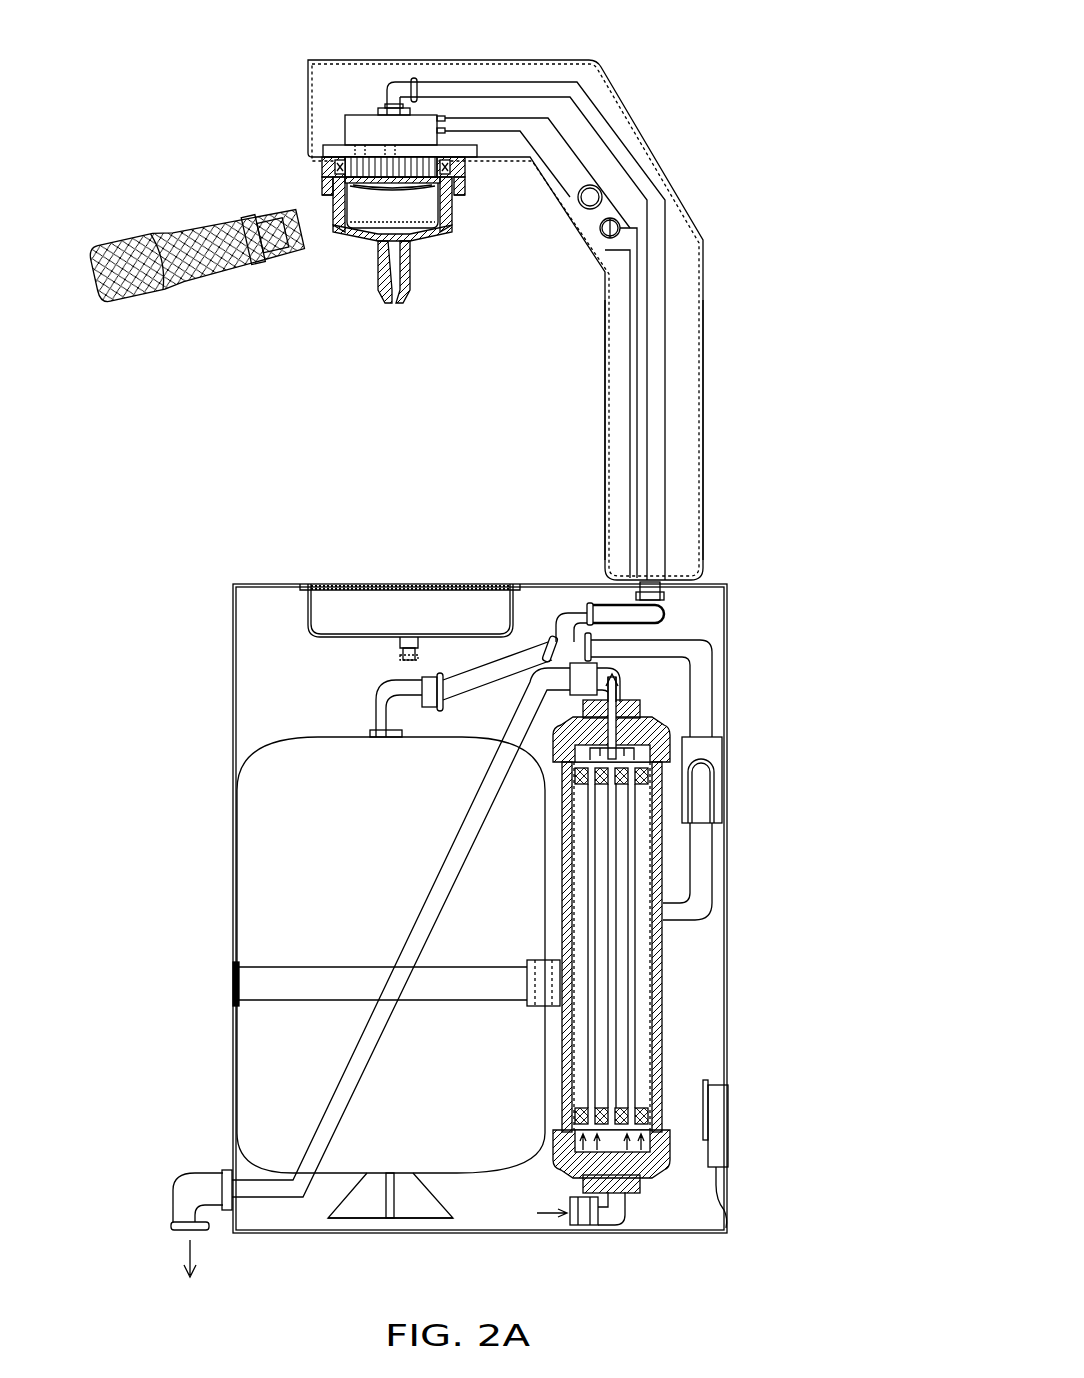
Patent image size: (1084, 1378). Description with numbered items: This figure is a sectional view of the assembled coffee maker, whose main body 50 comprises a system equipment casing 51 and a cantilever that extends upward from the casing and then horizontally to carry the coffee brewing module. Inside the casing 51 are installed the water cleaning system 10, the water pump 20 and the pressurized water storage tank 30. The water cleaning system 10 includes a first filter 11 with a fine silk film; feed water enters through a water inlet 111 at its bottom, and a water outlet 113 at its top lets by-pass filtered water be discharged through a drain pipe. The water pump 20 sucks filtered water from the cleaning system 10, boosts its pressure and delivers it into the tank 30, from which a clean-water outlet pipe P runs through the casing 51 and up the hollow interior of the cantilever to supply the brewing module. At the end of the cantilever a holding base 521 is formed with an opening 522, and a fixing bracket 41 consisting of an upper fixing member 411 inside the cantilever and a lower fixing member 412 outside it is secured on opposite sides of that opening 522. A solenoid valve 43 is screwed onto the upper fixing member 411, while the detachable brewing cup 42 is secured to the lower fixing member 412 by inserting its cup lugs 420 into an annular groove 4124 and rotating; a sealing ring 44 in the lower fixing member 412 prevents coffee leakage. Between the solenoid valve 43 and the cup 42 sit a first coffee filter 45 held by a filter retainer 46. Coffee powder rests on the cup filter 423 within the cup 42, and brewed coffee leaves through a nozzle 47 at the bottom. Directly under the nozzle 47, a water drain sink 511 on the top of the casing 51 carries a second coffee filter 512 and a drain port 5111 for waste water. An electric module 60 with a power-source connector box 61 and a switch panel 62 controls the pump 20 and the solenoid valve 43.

The water cleaning system 10 is at (666, 960).
The first filter 11 is at (668, 1020).
The water inlet 111 is at (633, 1190).
The water outlet 113 is at (622, 712).
The water pump 20 is at (714, 752).
The clean-water outlet pipe P is at (633, 650).
The pressurized water storage tank 30 is at (275, 838).
The fixing bracket 41 is at (338, 138).
The upper fixing member 411 is at (332, 152).
The lower fixing member 412 is at (323, 186).
The annular groove 4124 is at (280, 254).
The detachable brewing cup 42 is at (430, 238).
The cup lugs 420 is at (596, 190).
The cup filter 423 is at (367, 216).
The solenoid valve 43 is at (375, 118).
The sealing ring 44 is at (520, 160).
The first coffee filter 45 is at (397, 190).
The filter retainer 46 is at (385, 180).
The nozzle 47 is at (410, 280).
The main body 50 is at (705, 440).
The system equipment casing 51 is at (728, 620).
The water drain sink 511 is at (335, 640).
The second coffee filter 512 is at (393, 582).
The drain port 5111 is at (430, 648).
The holding base 521 is at (323, 161).
The opening 522 is at (322, 174).
The electric module 60 is at (716, 1170).
The power-source connector box 61 is at (618, 222).
The switch panel 62 is at (720, 1130).